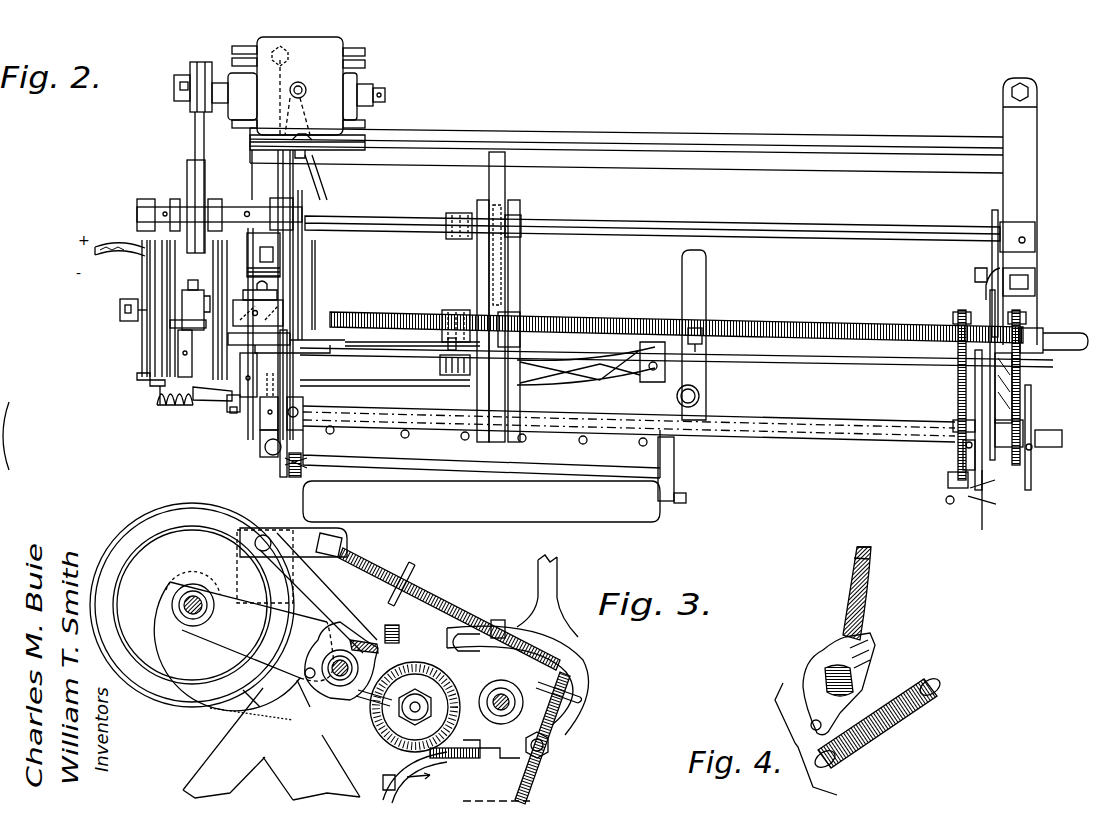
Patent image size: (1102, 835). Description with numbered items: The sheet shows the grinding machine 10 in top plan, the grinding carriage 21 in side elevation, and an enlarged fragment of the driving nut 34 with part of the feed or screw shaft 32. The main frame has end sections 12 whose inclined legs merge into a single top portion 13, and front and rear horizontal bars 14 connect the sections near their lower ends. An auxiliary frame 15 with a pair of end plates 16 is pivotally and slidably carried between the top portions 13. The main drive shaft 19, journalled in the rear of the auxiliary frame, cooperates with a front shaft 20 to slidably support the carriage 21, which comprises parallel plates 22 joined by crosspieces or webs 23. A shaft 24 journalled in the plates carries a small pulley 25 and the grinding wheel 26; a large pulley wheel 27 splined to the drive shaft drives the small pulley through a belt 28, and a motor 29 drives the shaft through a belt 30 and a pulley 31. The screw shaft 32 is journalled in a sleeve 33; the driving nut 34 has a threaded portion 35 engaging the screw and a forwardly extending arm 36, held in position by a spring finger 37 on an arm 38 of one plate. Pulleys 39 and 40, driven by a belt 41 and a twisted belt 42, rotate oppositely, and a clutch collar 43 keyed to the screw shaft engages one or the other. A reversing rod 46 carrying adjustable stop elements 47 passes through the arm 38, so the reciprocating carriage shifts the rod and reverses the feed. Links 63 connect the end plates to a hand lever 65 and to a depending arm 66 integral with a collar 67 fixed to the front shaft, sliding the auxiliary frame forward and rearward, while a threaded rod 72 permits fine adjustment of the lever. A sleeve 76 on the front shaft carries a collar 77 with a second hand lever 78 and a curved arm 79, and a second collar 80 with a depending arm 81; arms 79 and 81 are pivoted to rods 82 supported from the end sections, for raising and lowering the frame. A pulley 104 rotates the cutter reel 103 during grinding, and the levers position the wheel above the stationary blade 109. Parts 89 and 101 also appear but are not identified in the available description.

In FIG. 2, the grinding machine 10 is at (773, 447).
In FIG. 3, the grinding machine 10 is at (472, 704).
In FIG. 2, the end sections 12 is at (1032, 165).
In FIG. 2, the top portion 13 is at (1032, 294).
In FIG. 2, the horizontal bars 14 is at (832, 142).
In FIG. 2, the auxiliary frame 15 is at (979, 266).
In FIG. 2, the end plates 16 is at (300, 245).
In FIG. 3, the end plates 16 is at (525, 700).
In FIG. 2, the main drive shaft 19 is at (735, 225).
In FIG. 2, the front shaft 20 is at (395, 440).
In FIG. 3, the front shaft 20 is at (597, 730).
In FIG. 2, the grinding carriage 21 is at (526, 273).
In FIG. 3, the grinding carriage 21 is at (305, 720).
In FIG. 2, the parallel plates 22 is at (477, 280).
In FIG. 3, the parallel plates 22 is at (222, 640).
In FIG. 2, the crosspieces 23 is at (505, 298).
In FIG. 3, the crosspieces 23 is at (304, 678).
In FIG. 2, the shaft 24 is at (520, 362).
In FIG. 3, the shaft 24 is at (385, 715).
In FIG. 2, the small pulley 25 is at (500, 405).
In FIG. 2, the grinding wheel 26 is at (470, 387).
In FIG. 3, the grinding wheel 26 is at (362, 700).
In FIG. 2, the large pulley wheel 27 is at (505, 192).
In FIG. 3, the large pulley wheel 27 is at (158, 528).
In FIG. 2, the belt 28 is at (488, 187).
In FIG. 3, the belt 28 is at (335, 612).
In FIG. 2, the motor 29 is at (335, 46).
In FIG. 2, the belt 30 is at (194, 123).
In FIG. 2, the pulley 31 is at (190, 168).
In FIG. 2, the feed or screw shaft 32 is at (638, 322).
In FIG. 4, the feed or screw shaft 32 is at (918, 690).
In FIG. 2, the sleeve 33 is at (285, 300).
In FIG. 3, the driving nut 34 is at (333, 648).
In FIG. 4, the driving nut 34 is at (815, 660).
In FIG. 4, the threaded portion 35 is at (853, 680).
In FIG. 2, the forwardly extending arm 36 is at (447, 341).
In FIG. 4, the forwardly extending arm 36 is at (855, 590).
In FIG. 2, the spring finger 37 is at (440, 370).
In FIG. 3, the spring finger 37 is at (405, 642).
In FIG. 2, the arm 38 is at (500, 335).
In FIG. 3, the arm 38 is at (440, 620).
In FIG. 2, the pulley 39 is at (215, 270).
In FIG. 2, the pulley 40 is at (135, 303).
In FIG. 2, the belt 41 is at (165, 245).
In FIG. 2, the belt 42 is at (220, 240).
In FIG. 2, the clutch collar 43 is at (185, 283).
In FIG. 2, the reversing rod 46 is at (770, 360).
In FIG. 3, the reversing rod 46 is at (424, 608).
In FIG. 2, the stop elements 47 is at (365, 330).
In FIG. 2, the links 63 is at (262, 436).
In FIG. 2, the hand lever 65 is at (1031, 396).
In FIG. 2, the depending arm 66 is at (265, 450).
In FIG. 2, the collar 67 is at (260, 415).
In FIG. 2, the rod 72 is at (1022, 382).
In FIG. 2, the sleeve 76 is at (845, 436).
In FIG. 2, the collar 77 is at (965, 445).
In FIG. 2, the second hand lever 78 is at (975, 399).
In FIG. 3, the second hand lever 78 is at (540, 600).
In FIG. 2, the curved arm 79 is at (960, 488).
In FIG. 3, the curved arm 79 is at (549, 745).
In FIG. 2, the second collar 80 is at (303, 420).
In FIG. 2, the depending arm 81 is at (282, 462).
In FIG. 2, the rods 82 is at (300, 472).
In FIG. 3, the rods 82 is at (545, 702).
In FIG. 2, the block 89 is at (953, 424).
In FIG. 2, the disc 101 is at (175, 232).
In FIG. 2, the cutter reel 103 is at (600, 370).
In FIG. 3, the cutter reel 103 is at (445, 795).
In FIG. 2, the pulley 104 is at (175, 405).
In FIG. 2, the stationary blade 109 is at (578, 415).
In FIG. 3, the stationary blade 109 is at (465, 755).